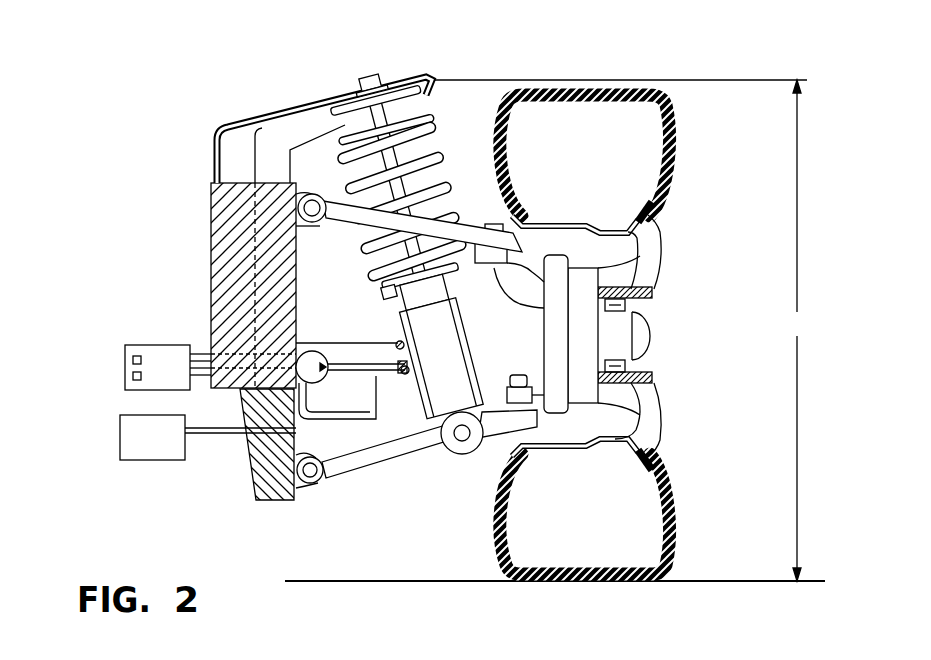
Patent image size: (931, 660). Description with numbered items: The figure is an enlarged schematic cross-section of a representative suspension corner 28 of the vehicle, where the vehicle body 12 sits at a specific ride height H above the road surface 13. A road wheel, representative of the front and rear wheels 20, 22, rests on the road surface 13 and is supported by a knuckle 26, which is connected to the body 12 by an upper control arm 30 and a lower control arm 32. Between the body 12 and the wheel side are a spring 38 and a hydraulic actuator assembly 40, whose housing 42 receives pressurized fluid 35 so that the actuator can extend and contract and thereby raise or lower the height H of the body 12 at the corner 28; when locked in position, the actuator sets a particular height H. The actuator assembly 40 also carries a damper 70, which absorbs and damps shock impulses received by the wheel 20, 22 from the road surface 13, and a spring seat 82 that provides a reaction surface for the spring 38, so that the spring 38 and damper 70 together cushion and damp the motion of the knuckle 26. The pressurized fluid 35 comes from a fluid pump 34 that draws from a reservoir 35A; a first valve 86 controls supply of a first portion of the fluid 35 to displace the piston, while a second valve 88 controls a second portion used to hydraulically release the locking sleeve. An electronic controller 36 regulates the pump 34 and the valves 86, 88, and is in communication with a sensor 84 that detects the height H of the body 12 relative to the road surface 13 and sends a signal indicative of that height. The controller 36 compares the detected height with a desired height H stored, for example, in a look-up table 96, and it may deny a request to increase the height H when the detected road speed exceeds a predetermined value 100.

The vehicle body 12 is at (429, 241).
The road surface 13 is at (535, 590).
The front wheel 20 is at (640, 334).
The rear wheel 22 is at (672, 493).
The knuckle 26 is at (656, 262).
The suspension corner 28 is at (510, 70).
The upper control arm 30 is at (456, 236).
The lower control arm 32 is at (386, 455).
The fluid pump 34 is at (312, 350).
The pressurized fluid 35 is at (370, 381).
The reservoir 35A is at (208, 437).
The electronic controller 36 is at (210, 367).
The spring 38 is at (356, 262).
The hydraulic actuator assembly 40 is at (464, 345).
The housing 42 is at (468, 357).
The damper 70 is at (396, 125).
The spring seat 82 is at (388, 297).
The sensor 84 is at (306, 108).
The first valve 86 is at (405, 376).
The second valve 88 is at (400, 340).
The look-up table 96 is at (133, 376).
The predetermined value 100 is at (133, 360).
The height H is at (797, 330).